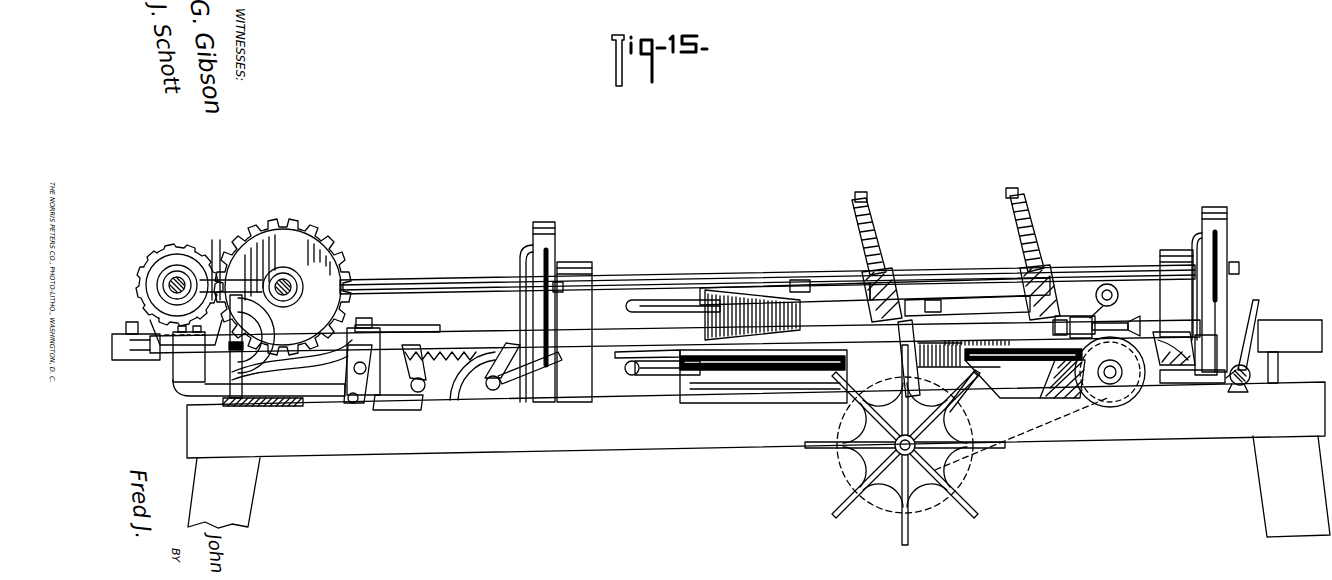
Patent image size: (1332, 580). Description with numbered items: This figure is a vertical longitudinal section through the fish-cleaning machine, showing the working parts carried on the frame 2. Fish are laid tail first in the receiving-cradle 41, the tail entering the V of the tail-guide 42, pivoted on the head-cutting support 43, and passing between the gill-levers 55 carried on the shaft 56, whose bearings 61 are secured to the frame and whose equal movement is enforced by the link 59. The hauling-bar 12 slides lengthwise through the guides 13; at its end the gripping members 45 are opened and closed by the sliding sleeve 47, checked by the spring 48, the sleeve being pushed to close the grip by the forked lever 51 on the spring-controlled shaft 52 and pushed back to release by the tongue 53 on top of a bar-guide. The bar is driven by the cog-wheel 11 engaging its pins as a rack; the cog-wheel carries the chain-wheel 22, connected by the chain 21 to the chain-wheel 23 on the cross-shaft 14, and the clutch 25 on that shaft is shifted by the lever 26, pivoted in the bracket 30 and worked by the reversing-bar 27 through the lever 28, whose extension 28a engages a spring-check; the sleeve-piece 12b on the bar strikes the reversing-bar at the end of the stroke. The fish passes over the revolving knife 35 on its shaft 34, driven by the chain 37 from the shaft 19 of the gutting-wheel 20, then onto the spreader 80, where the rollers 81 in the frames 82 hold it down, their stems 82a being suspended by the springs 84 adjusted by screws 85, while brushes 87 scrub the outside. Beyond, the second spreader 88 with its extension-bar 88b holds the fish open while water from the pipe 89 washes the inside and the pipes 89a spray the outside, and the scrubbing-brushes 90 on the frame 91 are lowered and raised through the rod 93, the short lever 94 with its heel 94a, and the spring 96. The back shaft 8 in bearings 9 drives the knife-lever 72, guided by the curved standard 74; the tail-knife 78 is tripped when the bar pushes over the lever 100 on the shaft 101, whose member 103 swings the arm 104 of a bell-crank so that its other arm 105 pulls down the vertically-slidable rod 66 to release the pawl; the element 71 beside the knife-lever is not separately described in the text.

The frame 2 is at (1205, 435).
The back shaft 8 is at (458, 282).
The bearings 9 is at (574, 262).
The cog-wheel 11 is at (300, 240).
The hauling-bar 12 is at (480, 340).
The sleeve-piece 12b is at (136, 360).
The bar-guides 13 is at (276, 357).
The cross-shaft 14 is at (170, 285).
The shaft 19 is at (848, 458).
The gutting-wheel 20 is at (902, 520).
The chain 21 is at (200, 254).
The chain-wheel 22 is at (291, 292).
The chain-wheel 23 is at (162, 270).
The clutch 25 is at (166, 293).
The lever 26 is at (216, 280).
The reversing-bar 27 is at (335, 337).
The lever 28 is at (244, 372).
The extension 28a is at (230, 352).
The bracket 30 is at (264, 360).
The knife shaft 34 is at (1112, 380).
The revolving splitting-knife 35 is at (1135, 382).
The chain 37 is at (1040, 442).
The receiving-cradle 41 is at (1290, 351).
The tail-guide 42 is at (1160, 340).
The head-cutting support 43 is at (1200, 350).
The gripping members 45 is at (1132, 320).
The sliding sleeve 47 is at (1080, 317).
The spring 48 is at (1092, 318).
The forked lever 51 is at (1082, 316).
The shaft 52 is at (1119, 294).
The tongue 53 is at (415, 325).
The gill-levers 55 is at (1252, 330).
The gill-lever shaft 56 is at (1250, 380).
The link 59 is at (1230, 384).
The bearings 61 is at (1246, 362).
The vertically-slidable rod 66 is at (524, 262).
The rod 71 is at (1218, 242).
The knife-lever 72 is at (563, 288).
The curved standard 74 is at (545, 224).
The tail-knife 78 is at (552, 252).
The spreader 80 is at (1025, 373).
The rollers 81 is at (908, 322).
The roller frame 82 is at (872, 292).
The stems 82a is at (902, 288).
The springs 84 is at (878, 228).
The screws 85 is at (866, 200).
The brushes 87 is at (976, 386).
The second spreader 88 is at (763, 376).
The extension-bar 88b is at (622, 358).
The pipe 89 is at (660, 378).
The spray-pipes 89a is at (650, 300).
The wire scrubbing-brushes 90 is at (738, 300).
The brush frame 91 is at (795, 280).
The rod 93 is at (398, 406).
The short lever 94 is at (368, 410).
The heel 94a is at (439, 359).
The spring 96 is at (340, 368).
The disengaging-lever 100 is at (430, 360).
The shaft 101 is at (420, 398).
The member 103 is at (454, 400).
The bell-crank arm 104 is at (480, 400).
The bell-crank arm 105 is at (518, 385).